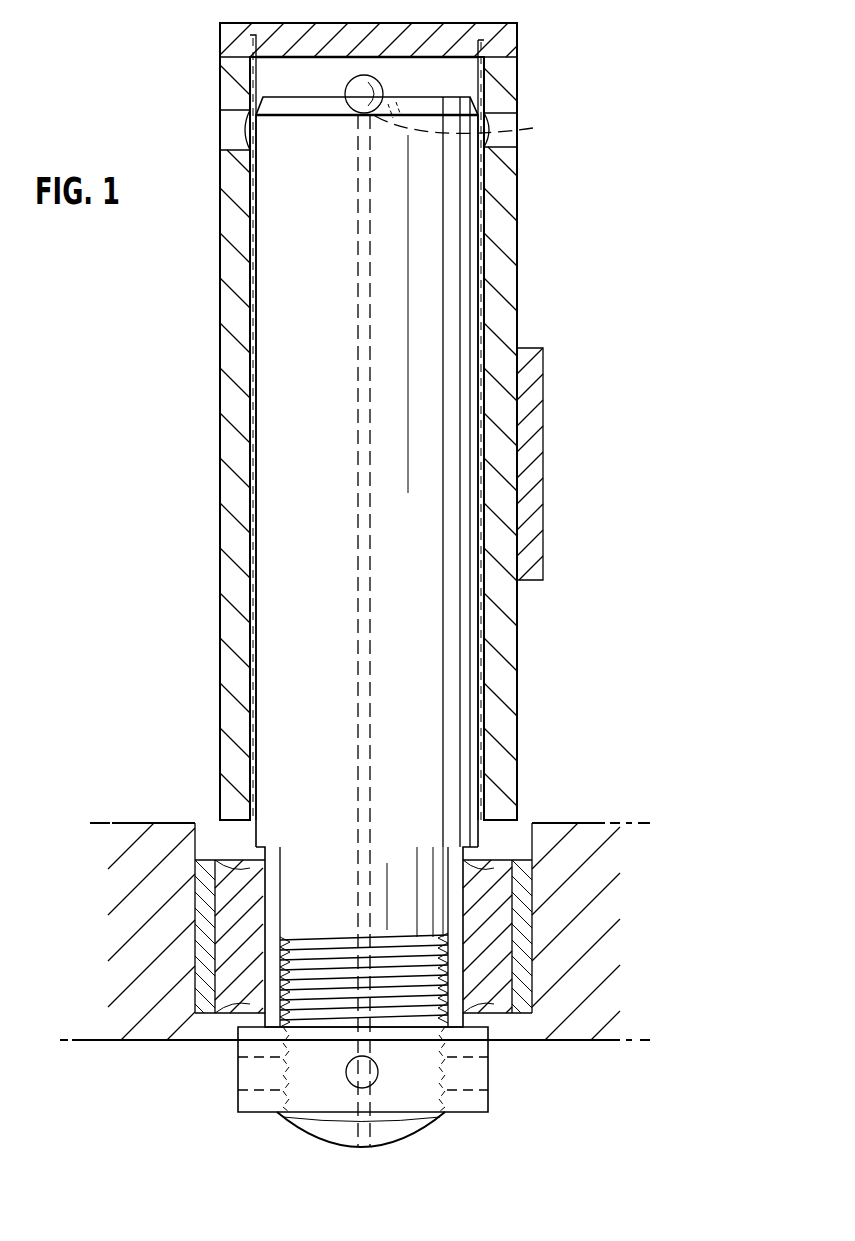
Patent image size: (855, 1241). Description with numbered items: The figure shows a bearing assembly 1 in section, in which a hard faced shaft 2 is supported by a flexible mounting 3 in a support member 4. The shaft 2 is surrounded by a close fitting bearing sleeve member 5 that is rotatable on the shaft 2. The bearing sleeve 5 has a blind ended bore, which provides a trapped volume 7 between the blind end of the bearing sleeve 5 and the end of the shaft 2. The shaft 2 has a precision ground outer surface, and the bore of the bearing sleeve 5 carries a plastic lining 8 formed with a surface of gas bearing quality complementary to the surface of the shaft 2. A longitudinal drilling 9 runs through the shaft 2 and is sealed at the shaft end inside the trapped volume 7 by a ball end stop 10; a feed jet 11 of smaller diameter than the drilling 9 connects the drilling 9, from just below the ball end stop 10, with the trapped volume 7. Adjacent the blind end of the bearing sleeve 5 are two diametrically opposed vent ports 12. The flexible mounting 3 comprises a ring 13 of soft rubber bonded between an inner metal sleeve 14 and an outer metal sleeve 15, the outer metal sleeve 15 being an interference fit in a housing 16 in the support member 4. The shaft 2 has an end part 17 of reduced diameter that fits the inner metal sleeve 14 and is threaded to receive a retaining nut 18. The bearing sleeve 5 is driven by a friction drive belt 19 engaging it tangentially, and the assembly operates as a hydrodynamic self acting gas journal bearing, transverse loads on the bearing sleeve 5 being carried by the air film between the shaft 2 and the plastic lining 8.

The bearing assembly 1 is at (430, 613).
The hard faced shaft 2 is at (275, 303).
The flexible mounting 3 is at (230, 1013).
The support member 4 is at (123, 1028).
The bearing sleeve member 5 is at (235, 453).
The trapped volume 7 is at (275, 70).
The plastic lining 8 is at (250, 232).
The longitudinal drilling 9 is at (370, 364).
The ball end stop 10 is at (382, 85).
The feed jet 11 is at (475, 134).
The vent ports 12 is at (540, 155).
The ring 13 is at (503, 937).
The inner metal sleeve 14 is at (512, 1010).
The outer metal sleeve 15 is at (458, 907).
The housing 16 is at (505, 968).
The end part 17 is at (317, 877).
The retaining nut 18 is at (300, 1084).
The friction drive belt 19 is at (533, 373).